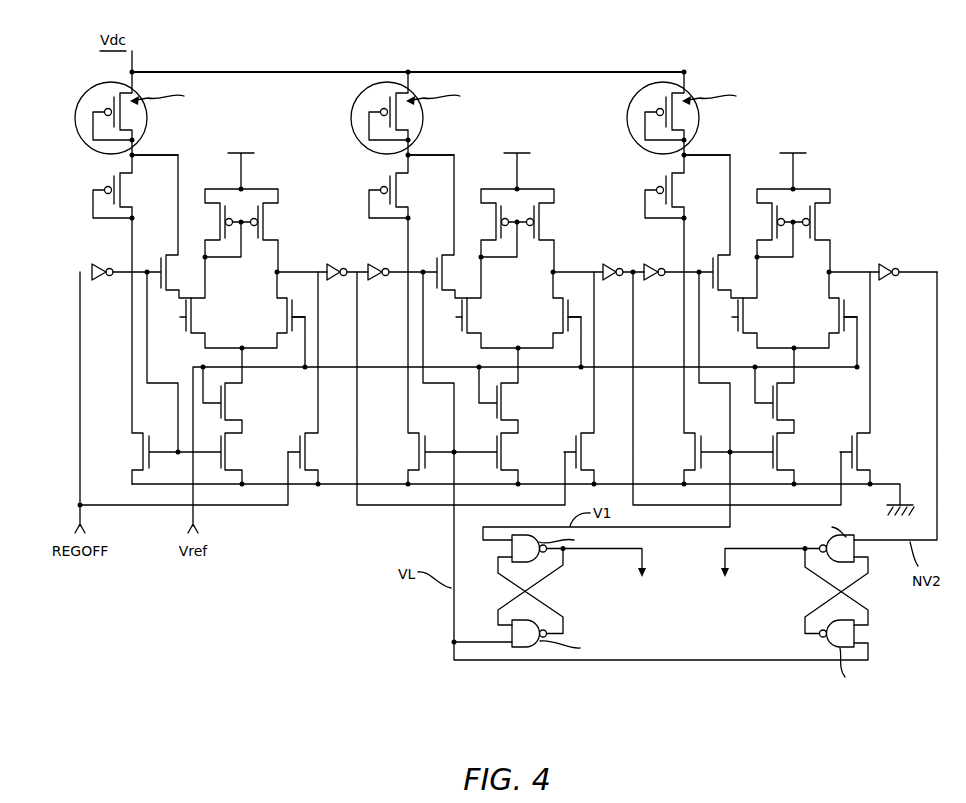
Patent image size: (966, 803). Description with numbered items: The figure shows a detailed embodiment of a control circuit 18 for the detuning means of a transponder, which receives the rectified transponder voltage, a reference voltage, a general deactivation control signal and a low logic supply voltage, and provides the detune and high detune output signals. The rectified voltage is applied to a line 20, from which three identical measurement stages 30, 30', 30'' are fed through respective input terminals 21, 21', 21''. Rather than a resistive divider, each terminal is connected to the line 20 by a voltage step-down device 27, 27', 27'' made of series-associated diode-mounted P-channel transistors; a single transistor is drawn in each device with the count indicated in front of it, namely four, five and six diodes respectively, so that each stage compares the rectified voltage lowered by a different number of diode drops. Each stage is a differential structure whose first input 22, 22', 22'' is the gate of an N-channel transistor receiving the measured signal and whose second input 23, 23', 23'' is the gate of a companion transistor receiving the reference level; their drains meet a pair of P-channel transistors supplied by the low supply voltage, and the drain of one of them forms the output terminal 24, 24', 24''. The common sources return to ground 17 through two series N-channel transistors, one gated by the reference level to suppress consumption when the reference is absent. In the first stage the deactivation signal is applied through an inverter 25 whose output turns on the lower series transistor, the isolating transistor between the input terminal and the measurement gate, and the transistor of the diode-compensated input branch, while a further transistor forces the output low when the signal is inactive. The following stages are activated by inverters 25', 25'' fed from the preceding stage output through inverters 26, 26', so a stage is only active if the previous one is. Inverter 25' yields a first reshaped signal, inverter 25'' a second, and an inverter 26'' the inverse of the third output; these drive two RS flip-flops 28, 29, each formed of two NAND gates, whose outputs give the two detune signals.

The line of application of voltage Vdc 20 is at (223, 72).
The control circuit 18 is at (784, 72).
The ground 17 is at (898, 484).
The first measurement stage 30 is at (216, 278).
The second measurement stage 30' is at (492, 278).
The third measurement stage 30'' is at (782, 278).
The voltage step-down device 27 is at (136, 118).
The voltage step-down device 27' is at (414, 118).
The voltage step-down device 27'' is at (693, 118).
The input terminal 21 is at (164, 145).
The input terminal 21' is at (442, 145).
The input terminal 21'' is at (720, 145).
The inverter 25 is at (107, 253).
The inverter 25' is at (383, 253).
The inverter 25'' is at (661, 253).
The output terminal 24 is at (301, 258).
The output terminal 24' is at (577, 258).
The output terminal 24'' is at (855, 258).
The inverter 26 is at (342, 255).
The inverter 26' is at (618, 255).
The inverter 26'' is at (908, 255).
The first input 22 is at (173, 338).
The first input 22' is at (449, 338).
The first input 22'' is at (727, 338).
The second input 23 is at (305, 296).
The second input 23' is at (583, 296).
The second input 23'' is at (861, 296).
The RS flip-flop 28 is at (575, 613).
The RS flip-flop 29 is at (780, 609).